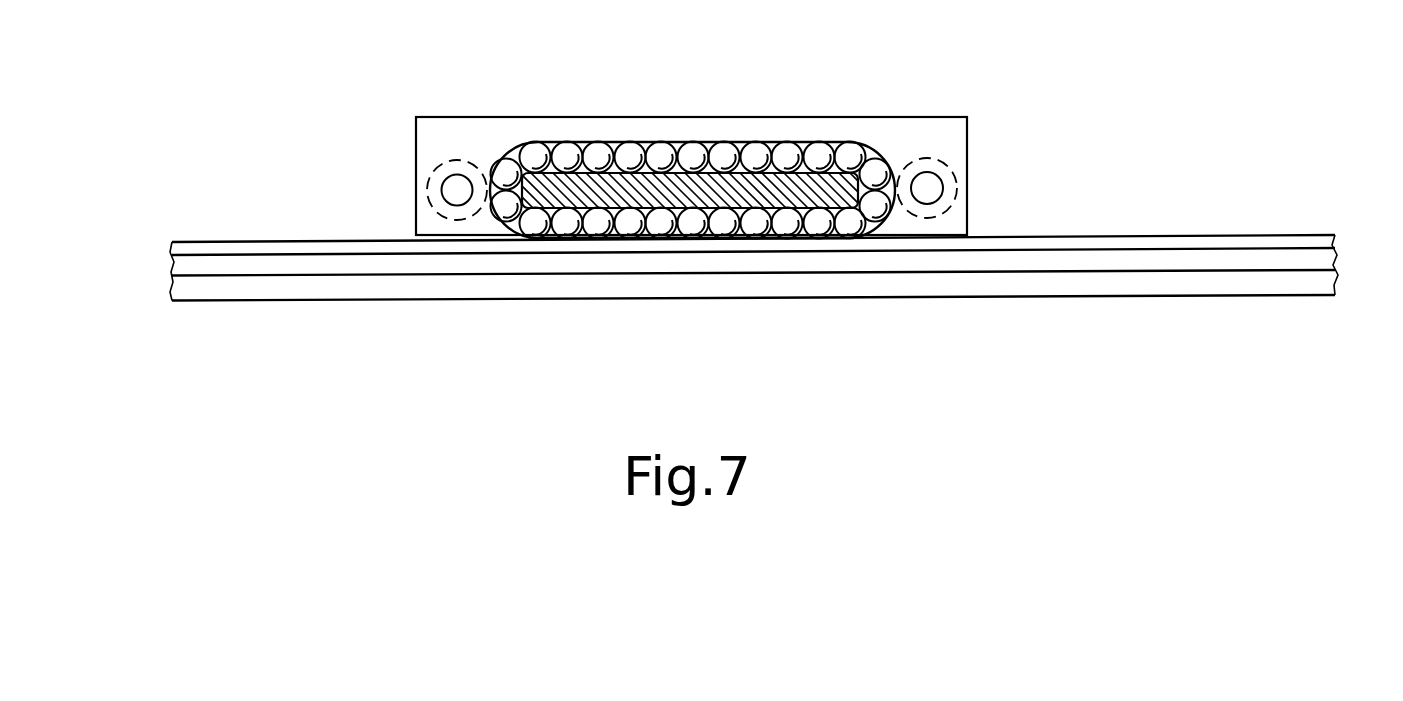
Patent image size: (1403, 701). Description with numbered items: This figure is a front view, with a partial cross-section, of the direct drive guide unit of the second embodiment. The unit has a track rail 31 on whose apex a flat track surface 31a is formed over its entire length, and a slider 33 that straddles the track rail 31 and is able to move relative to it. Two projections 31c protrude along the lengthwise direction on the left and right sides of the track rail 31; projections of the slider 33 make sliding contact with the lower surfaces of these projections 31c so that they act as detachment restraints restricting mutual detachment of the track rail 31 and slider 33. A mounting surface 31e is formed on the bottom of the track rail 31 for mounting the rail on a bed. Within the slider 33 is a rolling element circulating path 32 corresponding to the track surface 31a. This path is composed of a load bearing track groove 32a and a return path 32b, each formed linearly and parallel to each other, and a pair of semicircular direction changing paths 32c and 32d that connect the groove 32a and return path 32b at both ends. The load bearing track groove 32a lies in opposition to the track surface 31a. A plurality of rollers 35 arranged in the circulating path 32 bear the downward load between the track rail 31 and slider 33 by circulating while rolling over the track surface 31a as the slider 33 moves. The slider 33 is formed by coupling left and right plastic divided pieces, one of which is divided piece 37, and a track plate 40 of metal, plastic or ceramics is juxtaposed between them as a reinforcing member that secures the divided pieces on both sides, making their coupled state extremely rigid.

The track rail 31 is at (754, 225).
The track surface 31a is at (1225, 233).
The projections 31c is at (1096, 260).
The mounting surface 31e is at (327, 300).
The rolling element circulating path 32 is at (687, 208).
The load bearing track groove 32a is at (752, 178).
The return path 32b is at (633, 150).
The direction changing path 32c is at (533, 150).
The direction changing path 32d is at (851, 150).
The slider 33 is at (966, 112).
The roller 35 is at (692, 238).
The divided piece 37 is at (581, 121).
The track plate 40 is at (793, 240).